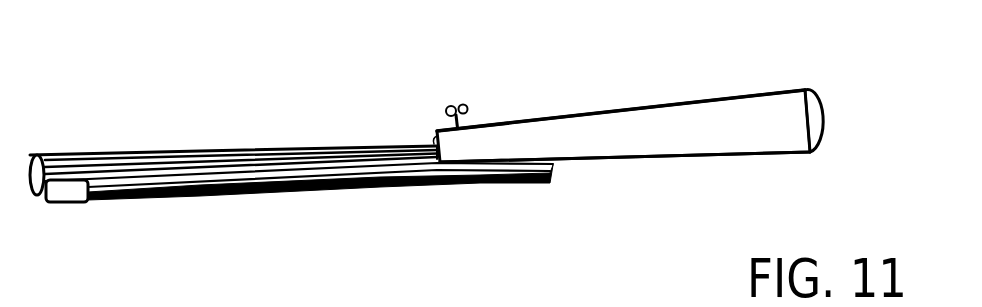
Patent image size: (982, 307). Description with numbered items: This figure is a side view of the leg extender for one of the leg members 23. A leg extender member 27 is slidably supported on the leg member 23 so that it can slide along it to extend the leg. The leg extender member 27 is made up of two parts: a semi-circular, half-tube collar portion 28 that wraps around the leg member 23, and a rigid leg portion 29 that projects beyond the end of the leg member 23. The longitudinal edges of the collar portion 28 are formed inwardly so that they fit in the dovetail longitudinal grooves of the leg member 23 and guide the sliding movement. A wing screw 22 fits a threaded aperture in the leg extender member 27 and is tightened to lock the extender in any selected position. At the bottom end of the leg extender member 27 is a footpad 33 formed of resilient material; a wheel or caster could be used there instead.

The wing screw 22 is at (452, 105).
The leg member 23 is at (173, 152).
The leg extender member 27 is at (562, 148).
The collar portion 28 is at (705, 158).
The rigid leg portion 29 is at (620, 108).
The footpad 33 is at (812, 95).